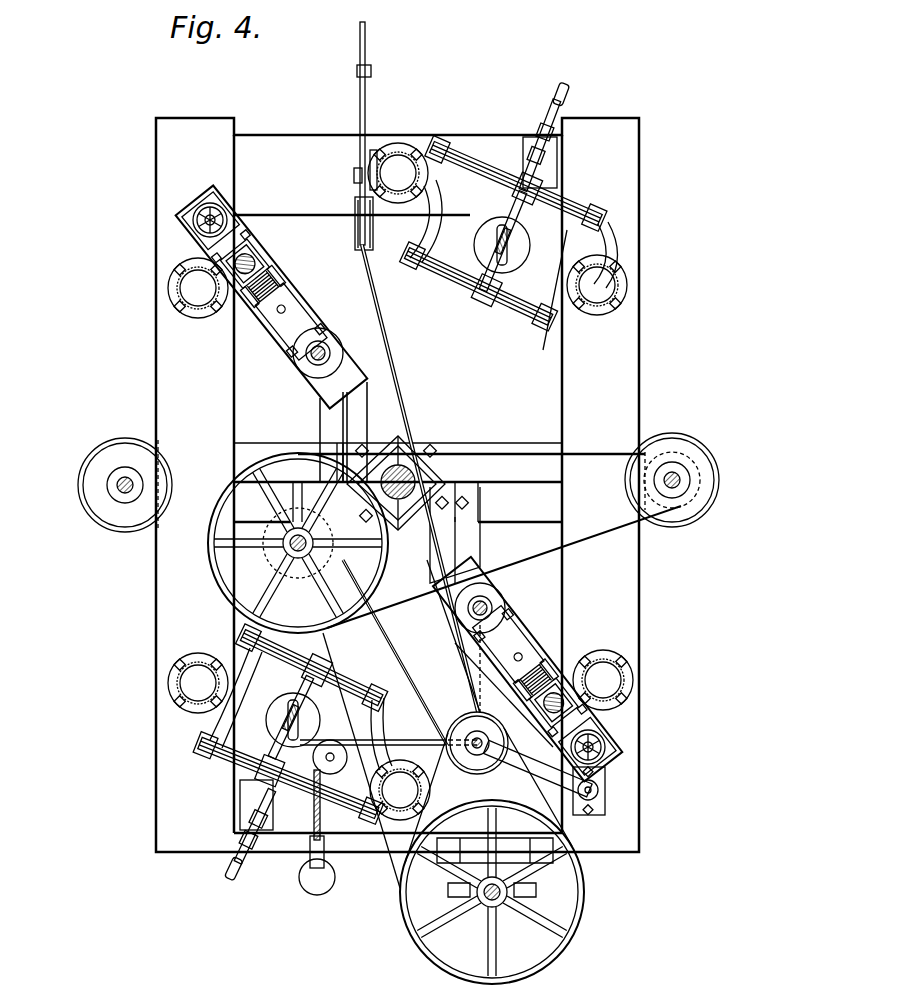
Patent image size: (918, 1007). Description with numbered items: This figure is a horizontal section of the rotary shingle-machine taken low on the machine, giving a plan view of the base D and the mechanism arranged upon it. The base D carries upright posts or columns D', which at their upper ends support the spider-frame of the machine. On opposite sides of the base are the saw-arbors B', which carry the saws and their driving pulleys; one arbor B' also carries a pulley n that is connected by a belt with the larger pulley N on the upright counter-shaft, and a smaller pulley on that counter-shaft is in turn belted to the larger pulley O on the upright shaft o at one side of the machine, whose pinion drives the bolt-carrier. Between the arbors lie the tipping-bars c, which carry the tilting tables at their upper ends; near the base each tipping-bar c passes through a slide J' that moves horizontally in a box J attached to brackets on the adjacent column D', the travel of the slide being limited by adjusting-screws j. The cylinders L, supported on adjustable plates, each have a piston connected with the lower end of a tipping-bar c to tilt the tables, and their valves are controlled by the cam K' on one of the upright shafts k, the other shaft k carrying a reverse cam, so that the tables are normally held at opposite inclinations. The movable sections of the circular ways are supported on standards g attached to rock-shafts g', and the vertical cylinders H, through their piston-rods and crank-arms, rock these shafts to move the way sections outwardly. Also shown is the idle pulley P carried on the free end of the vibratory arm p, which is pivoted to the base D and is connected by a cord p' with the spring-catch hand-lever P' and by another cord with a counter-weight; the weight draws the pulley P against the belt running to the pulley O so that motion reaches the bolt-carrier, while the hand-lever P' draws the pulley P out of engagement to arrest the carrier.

The base D is at (397, 507).
The upright posts or columns D' is at (395, 461).
The spring-catch hand-lever P' is at (377, 136).
The cord p' is at (401, 566).
The standards g is at (399, 489).
The rock-shafts g' is at (400, 479).
The vertical cylinders H is at (518, 258).
The tipping-bars c is at (414, 475).
The cam K' is at (399, 483).
The cylinders L is at (278, 285).
The slides J' is at (402, 470).
The boxes J is at (399, 491).
The adjusting-screws j is at (206, 206).
The pinion i is at (606, 748).
The upright shafts k is at (328, 350).
The arbors B' is at (398, 471).
The larger pulley N is at (378, 566).
The pulley n is at (290, 553).
The idle pulley P is at (488, 778).
The vibratory arm p is at (544, 777).
The larger pulley O is at (490, 942).
The upright shaft o is at (512, 918).